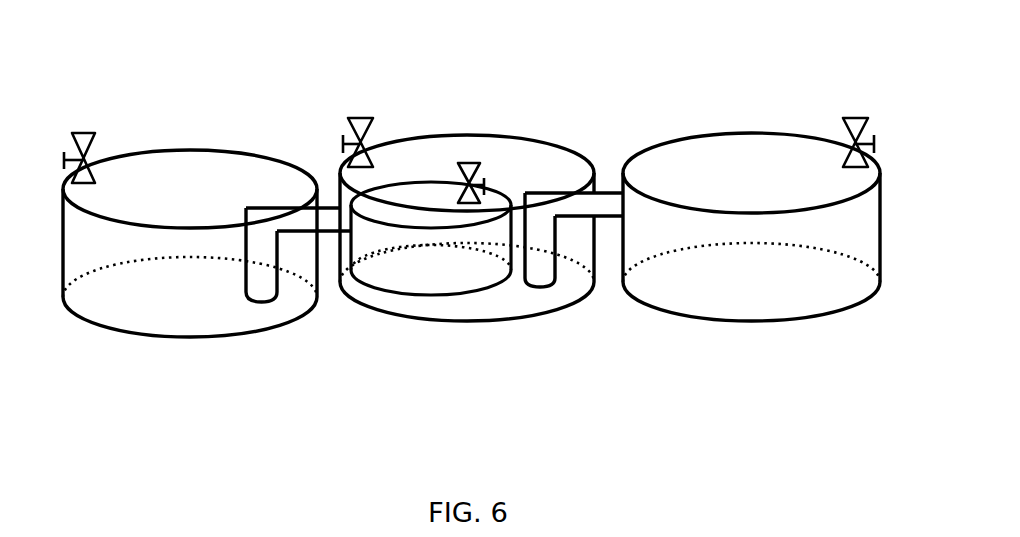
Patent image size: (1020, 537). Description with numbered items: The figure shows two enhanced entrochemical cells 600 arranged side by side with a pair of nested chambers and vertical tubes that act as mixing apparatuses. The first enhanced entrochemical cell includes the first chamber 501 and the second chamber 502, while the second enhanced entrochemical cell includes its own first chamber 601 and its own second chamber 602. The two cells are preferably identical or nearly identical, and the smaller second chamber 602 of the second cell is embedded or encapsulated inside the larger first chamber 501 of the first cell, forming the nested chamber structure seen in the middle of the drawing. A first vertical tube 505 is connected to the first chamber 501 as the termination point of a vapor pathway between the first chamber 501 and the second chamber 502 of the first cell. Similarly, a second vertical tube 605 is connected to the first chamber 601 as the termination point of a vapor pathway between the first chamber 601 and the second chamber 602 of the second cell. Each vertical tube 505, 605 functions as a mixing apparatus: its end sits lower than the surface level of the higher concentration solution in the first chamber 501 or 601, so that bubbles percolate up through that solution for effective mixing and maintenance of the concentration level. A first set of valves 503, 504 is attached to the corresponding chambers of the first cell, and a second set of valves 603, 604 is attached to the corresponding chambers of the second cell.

The enhanced entrochemical cells 600 is at (486, 457).
The first chamber of the second enhanced entrochemical cell 601 is at (188, 306).
The second chamber of the second enhanced entrochemical cell 602 is at (428, 282).
The valve 603 is at (90, 128).
The valve 604 is at (471, 160).
The second vertical tube 605 is at (254, 206).
The first chamber of the first enhanced entrochemical cell 501 is at (498, 305).
The second chamber of the first enhanced entrochemical cell 502 is at (752, 307).
The valve 503 is at (362, 115).
The valve 504 is at (848, 115).
The first vertical tube 505 is at (545, 189).